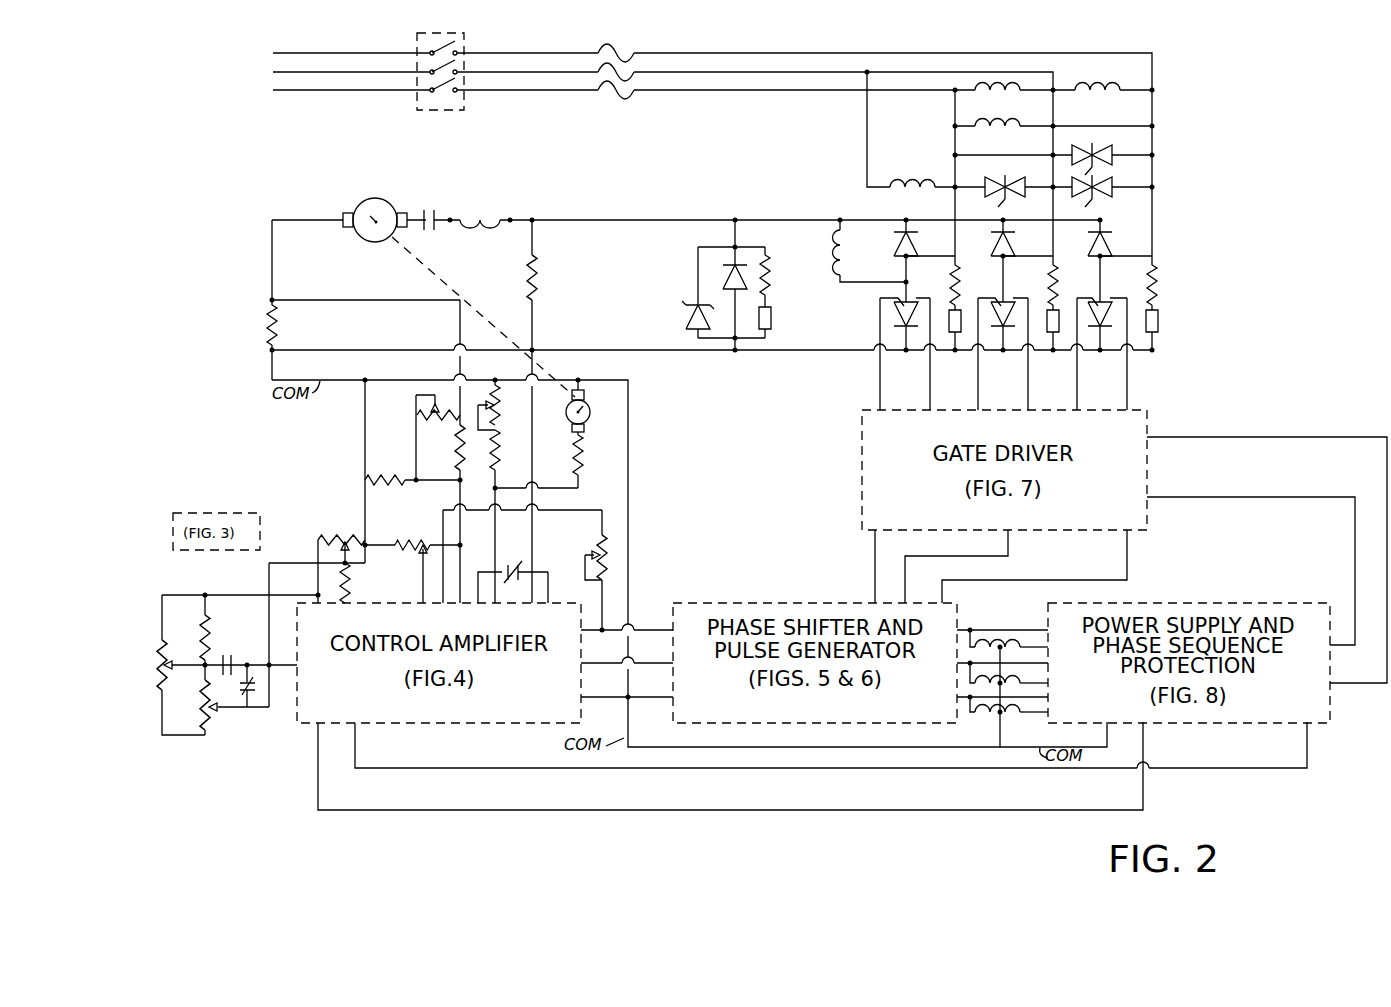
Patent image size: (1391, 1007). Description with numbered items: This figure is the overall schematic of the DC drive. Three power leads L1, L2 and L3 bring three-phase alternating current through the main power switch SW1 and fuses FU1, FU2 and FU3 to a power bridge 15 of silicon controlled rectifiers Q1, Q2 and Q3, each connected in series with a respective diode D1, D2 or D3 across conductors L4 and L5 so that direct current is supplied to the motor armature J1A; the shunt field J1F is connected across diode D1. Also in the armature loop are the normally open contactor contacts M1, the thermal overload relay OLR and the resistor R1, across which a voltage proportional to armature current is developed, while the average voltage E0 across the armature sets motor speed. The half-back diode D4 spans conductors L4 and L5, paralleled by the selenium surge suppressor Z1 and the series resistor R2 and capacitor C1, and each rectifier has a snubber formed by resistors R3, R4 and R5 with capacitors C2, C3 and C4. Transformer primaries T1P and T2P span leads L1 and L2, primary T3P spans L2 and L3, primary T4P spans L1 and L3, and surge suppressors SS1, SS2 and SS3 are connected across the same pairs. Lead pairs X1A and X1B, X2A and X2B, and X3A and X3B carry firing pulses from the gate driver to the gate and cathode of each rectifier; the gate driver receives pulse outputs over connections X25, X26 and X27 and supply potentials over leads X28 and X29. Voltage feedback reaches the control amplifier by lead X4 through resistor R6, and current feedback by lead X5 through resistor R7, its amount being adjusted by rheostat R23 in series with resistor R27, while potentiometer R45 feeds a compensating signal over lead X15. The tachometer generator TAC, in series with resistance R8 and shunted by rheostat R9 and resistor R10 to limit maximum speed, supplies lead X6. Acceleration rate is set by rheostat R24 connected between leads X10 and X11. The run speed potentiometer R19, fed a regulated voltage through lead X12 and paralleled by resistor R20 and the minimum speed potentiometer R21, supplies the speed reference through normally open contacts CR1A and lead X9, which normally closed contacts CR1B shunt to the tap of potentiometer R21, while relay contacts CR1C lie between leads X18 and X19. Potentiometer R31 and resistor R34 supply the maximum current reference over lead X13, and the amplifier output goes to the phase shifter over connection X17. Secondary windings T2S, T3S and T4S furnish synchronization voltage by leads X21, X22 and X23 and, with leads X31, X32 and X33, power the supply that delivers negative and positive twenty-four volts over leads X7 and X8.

The power lead L1 is at (298, 92).
The power lead L2 is at (298, 74).
The power lead L3 is at (298, 55).
The main power switch SW1 is at (420, 112).
The fuse FU1 is at (640, 85).
The fuse FU2 is at (640, 67).
The fuse FU3 is at (640, 47).
The primary winding of transformer T1 T1P is at (925, 180).
The primary winding of transformer T2 T2P is at (1010, 98).
The primary winding of transformer T3 T3P is at (1110, 98).
The primary winding of transformer T4 T4P is at (1010, 134).
The surge suppressor SS1 is at (990, 175).
The surge suppressor SS2 is at (1100, 184).
The surge suppressor SS3 is at (1100, 152).
The motor armature J1A is at (378, 200).
The normally open contacts of magnetic contactor M1 is at (430, 208).
The thermal overload relay OLR is at (490, 210).
The DC armature voltage E0 is at (536, 215).
The conductor L4 is at (680, 219).
The conductor L5 is at (709, 352).
The resistor R1 is at (266, 326).
The resistor R6 is at (537, 275).
The half-back diode D4 is at (732, 271).
The selenium surge suppressor diode Z1 is at (686, 312).
The resistor R2 is at (770, 278).
The capacitor C1 is at (772, 320).
The shunt field J1F is at (836, 246).
The diode D1 is at (894, 247).
The diode D2 is at (991, 247).
The diode D3 is at (1088, 247).
The resistor R3 is at (948, 278).
The resistor R4 is at (1058, 280).
The resistor R5 is at (1157, 283).
The capacitor C2 is at (948, 311).
The capacitor C3 is at (1057, 312).
The capacitor C4 is at (1158, 322).
The SCR power bridge 15 is at (990, 313).
The silicon controlled rectifier Q1 is at (892, 316).
The silicon controlled rectifier Q2 is at (1004, 302).
The silicon controlled rectifier Q3 is at (1102, 302).
The lead X1A is at (872, 384).
The lead X1B is at (924, 376).
The lead X2A is at (993, 377).
The lead X2B is at (1043, 377).
The lead X3A is at (1092, 377).
The lead X3B is at (1142, 377).
The connection X29 is at (1203, 436).
The lead X28 is at (1203, 496).
The lead X25 is at (878, 548).
The connection X26 is at (1010, 548).
The connection X27 is at (1129, 563).
The rheostat-connected potentiometer R9 is at (480, 403).
The resistor R10 is at (494, 458).
The tachometer generator TAC is at (590, 424).
The resistance R8 is at (583, 462).
The lead X4 is at (535, 545).
The connection X6 is at (498, 545).
The lead X10 is at (438, 524).
The rheostat-connected potentiometer R24 is at (586, 556).
The rheostat-connected potentiometer R23 is at (440, 425).
The resistor R7 is at (457, 458).
The resistor R27 is at (404, 476).
The lead X5 is at (463, 545).
The potentiometer R45 is at (426, 538).
The lead X15 is at (420, 566).
The potentiometer R31 is at (340, 540).
The resistor R34 is at (351, 582).
The lead X13 is at (352, 600).
The lead X12 is at (310, 593).
The terminal X18 is at (478, 578).
The relay contacts CR1C is at (512, 590).
The terminal X19 is at (552, 586).
The lead X11 is at (630, 624).
The connection X17 is at (588, 658).
The run speed potentiometer R19 is at (167, 665).
The resistor R20 is at (202, 633).
The minimum speed potentiometer R21 is at (205, 709).
The normally open contacts CR1A is at (212, 661).
The normally closed contacts CR1B is at (244, 692).
The lead X9 is at (295, 665).
The lead X21 is at (966, 628).
The lead X22 is at (958, 658).
The lead X23 is at (958, 698).
The secondary winding of transformer T2 T2S is at (985, 640).
The secondary winding of transformer T3 T3S is at (975, 683).
The secondary winding of transformer T4 T4S is at (981, 716).
The lead X31 is at (1042, 648).
The lead X32 is at (1042, 684).
The lead X33 is at (1042, 714).
The lead X7 is at (316, 774).
The lead X8 is at (358, 755).